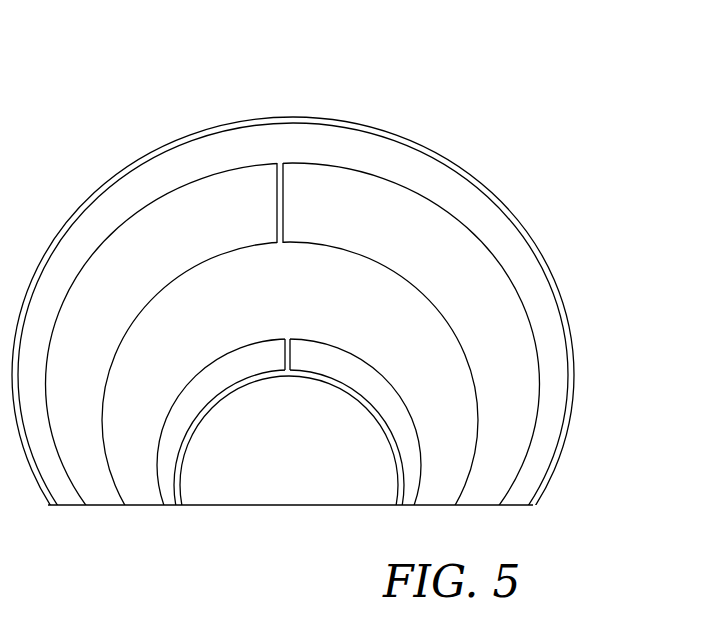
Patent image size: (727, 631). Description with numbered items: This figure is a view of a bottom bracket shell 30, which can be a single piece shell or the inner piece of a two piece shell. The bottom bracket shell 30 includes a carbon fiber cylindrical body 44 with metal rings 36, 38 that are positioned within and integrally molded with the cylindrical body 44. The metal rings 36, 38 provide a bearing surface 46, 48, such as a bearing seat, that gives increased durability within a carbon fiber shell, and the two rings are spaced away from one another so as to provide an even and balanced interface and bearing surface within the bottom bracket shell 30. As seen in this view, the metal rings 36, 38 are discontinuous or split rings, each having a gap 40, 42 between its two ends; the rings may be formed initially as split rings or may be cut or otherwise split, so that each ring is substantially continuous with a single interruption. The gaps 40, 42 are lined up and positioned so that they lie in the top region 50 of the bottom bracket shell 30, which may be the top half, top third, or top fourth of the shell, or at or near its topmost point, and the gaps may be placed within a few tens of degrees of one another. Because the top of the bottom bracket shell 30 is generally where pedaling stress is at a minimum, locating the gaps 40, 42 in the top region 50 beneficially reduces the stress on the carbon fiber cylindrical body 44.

The bottom bracket shell 30 is at (331, 324).
The metal ring 36 is at (348, 316).
The metal ring 38 is at (368, 405).
The gap 40 is at (279, 161).
The gap 42 is at (288, 373).
The carbon fiber cylindrical body 44 is at (140, 178).
The bearing surface 46 is at (437, 250).
The bearing surface 48 is at (402, 433).
The top region 50 is at (243, 116).